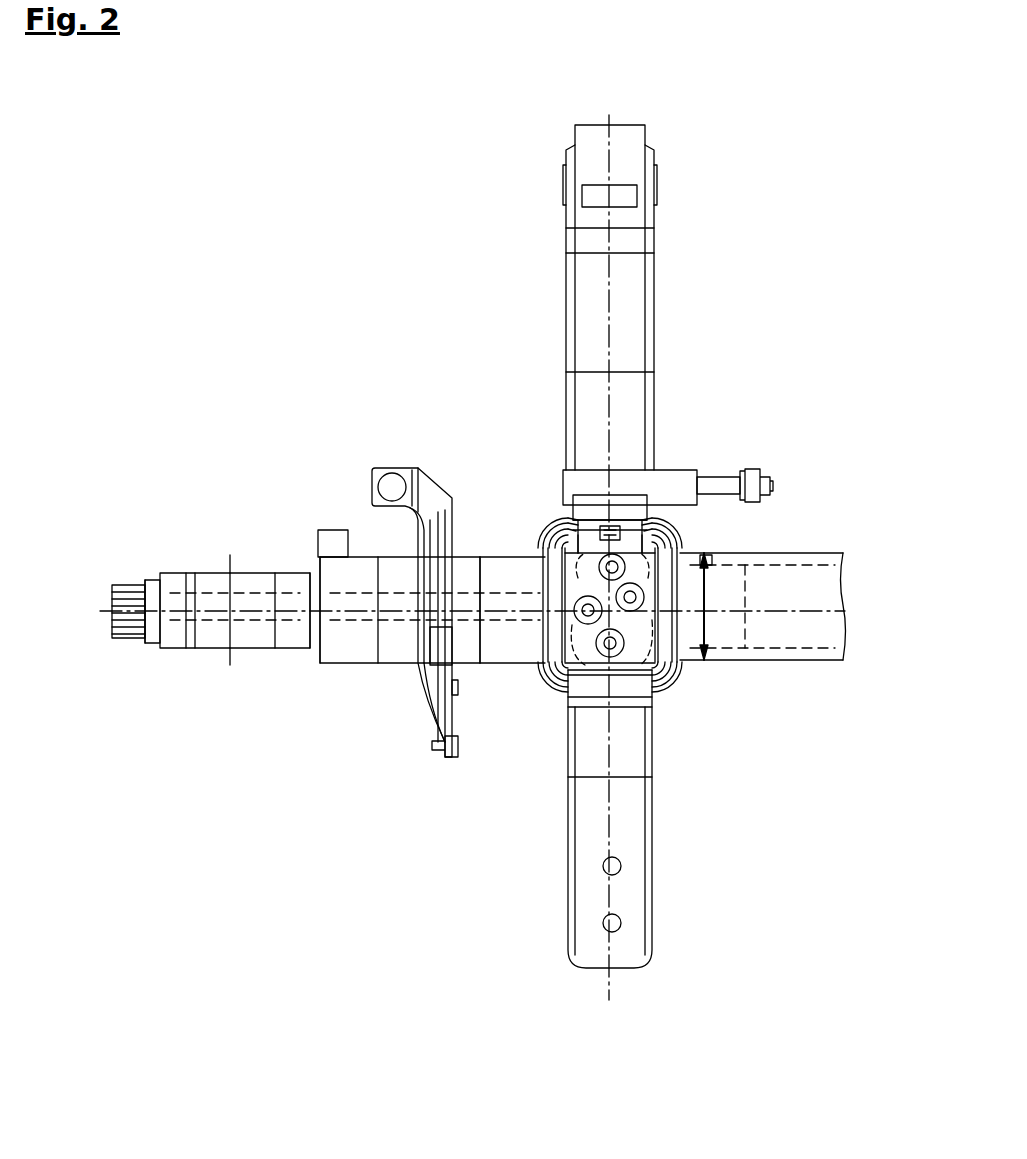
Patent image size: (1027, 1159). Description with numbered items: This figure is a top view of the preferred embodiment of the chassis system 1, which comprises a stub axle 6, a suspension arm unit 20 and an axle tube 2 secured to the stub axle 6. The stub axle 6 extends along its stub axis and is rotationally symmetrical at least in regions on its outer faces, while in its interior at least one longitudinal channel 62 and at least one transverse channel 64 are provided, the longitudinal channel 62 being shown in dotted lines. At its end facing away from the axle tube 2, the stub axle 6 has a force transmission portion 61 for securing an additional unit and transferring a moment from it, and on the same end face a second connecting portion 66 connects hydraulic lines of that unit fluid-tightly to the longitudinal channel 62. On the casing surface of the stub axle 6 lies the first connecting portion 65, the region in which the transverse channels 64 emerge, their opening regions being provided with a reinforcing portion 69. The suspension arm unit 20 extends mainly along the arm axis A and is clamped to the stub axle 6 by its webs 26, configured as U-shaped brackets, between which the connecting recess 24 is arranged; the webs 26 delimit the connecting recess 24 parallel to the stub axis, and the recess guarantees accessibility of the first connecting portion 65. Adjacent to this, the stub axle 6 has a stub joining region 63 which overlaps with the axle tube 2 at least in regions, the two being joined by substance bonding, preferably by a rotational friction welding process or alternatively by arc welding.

The chassis system 1 is at (495, 380).
The axle tube 2 is at (806, 583).
The stub axle 6 is at (303, 570).
The suspension arm unit 20 is at (640, 753).
The connecting recess 24 is at (620, 572).
The web 26 is at (556, 562).
The force transmission portion 61 is at (131, 640).
The longitudinal channel 62 is at (362, 603).
The stub joining region 63 is at (695, 650).
The transverse channel 64 is at (640, 598).
The first connecting portion 65 is at (563, 697).
The second connecting portion 66 is at (112, 600).
The reinforcing portion 69 is at (645, 693).
The arm axis A is at (613, 296).